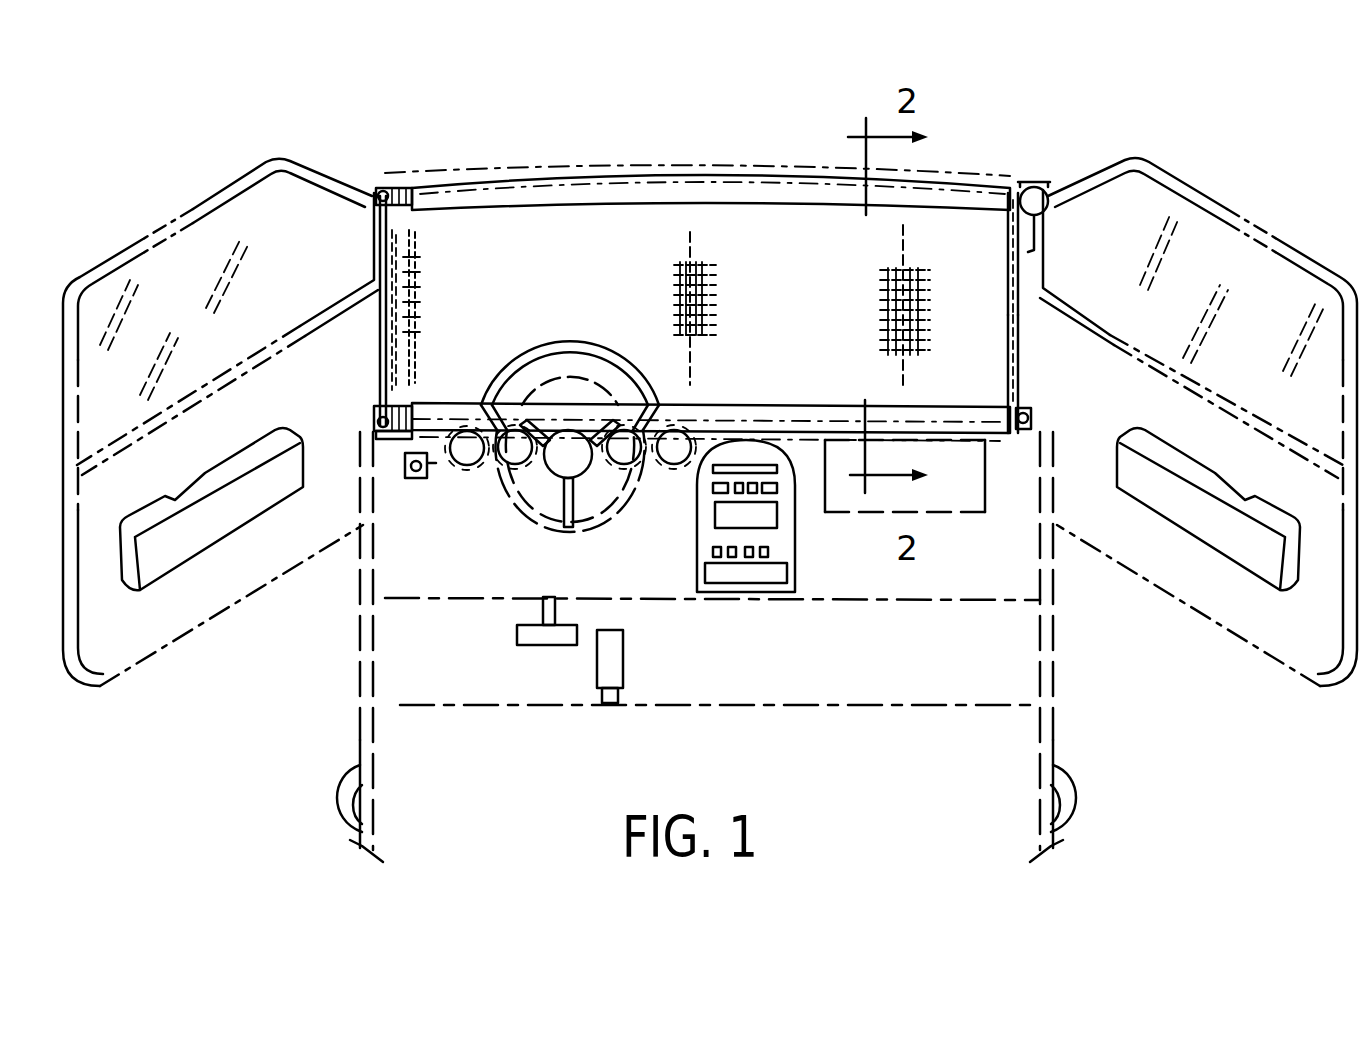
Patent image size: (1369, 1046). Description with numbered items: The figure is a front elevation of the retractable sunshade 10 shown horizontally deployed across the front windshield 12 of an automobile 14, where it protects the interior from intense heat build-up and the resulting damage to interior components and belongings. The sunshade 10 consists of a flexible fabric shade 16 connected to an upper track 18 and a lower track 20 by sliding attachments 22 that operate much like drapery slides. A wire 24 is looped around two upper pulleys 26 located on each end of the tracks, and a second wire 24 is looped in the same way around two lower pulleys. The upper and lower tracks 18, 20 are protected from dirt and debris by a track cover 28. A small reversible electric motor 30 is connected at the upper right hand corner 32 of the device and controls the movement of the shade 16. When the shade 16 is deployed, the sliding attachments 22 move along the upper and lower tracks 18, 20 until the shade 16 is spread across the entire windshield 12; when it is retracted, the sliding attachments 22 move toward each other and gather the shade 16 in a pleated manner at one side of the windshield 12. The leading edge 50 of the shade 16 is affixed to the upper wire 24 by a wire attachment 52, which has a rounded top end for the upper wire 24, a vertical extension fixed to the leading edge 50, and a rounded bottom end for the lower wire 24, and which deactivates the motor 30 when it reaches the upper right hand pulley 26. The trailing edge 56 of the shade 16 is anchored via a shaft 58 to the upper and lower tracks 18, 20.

The retractable sunshade 10 is at (616, 120).
The front windshield 12 is at (1078, 185).
The automobile 14 is at (940, 600).
The flexible fabric shade 16 is at (985, 318).
The upper track 18 is at (378, 196).
The lower track 20 is at (390, 433).
The sliding attachments 22 is at (385, 242).
The wire 24 is at (398, 188).
The upper pulleys 26 is at (384, 190).
The track cover 28 is at (597, 200).
The reversible electric motor 30 is at (1045, 205).
The upper right hand corner 32 is at (976, 193).
The leading edge 50 is at (1016, 270).
The wire attachment 52 is at (1013, 350).
The trailing edge 56 is at (397, 275).
The shaft 58 is at (392, 316).